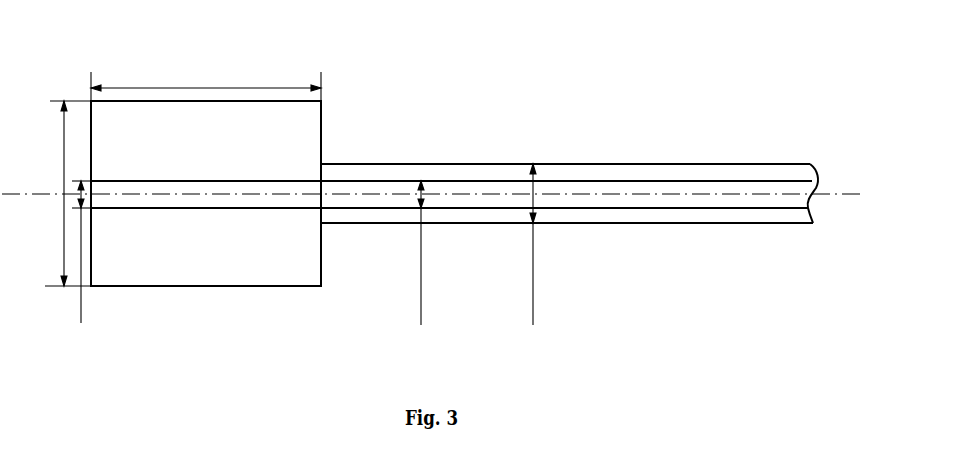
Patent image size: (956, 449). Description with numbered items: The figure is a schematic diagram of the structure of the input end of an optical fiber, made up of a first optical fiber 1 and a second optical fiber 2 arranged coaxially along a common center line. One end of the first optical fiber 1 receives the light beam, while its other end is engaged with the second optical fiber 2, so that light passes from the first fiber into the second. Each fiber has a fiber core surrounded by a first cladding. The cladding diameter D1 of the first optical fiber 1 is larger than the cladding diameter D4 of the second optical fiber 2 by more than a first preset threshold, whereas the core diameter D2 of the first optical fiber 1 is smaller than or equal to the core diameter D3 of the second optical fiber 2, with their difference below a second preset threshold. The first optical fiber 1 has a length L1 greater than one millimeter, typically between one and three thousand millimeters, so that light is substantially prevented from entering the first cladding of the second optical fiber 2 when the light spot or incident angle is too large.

The first optical fiber 1 is at (187, 286).
The second optical fiber 2 is at (613, 223).
The length of the first optical fiber L1 is at (206, 79).
The diameter of the first cladding of the first optical fiber D1 is at (64, 193).
The diameter of the fiber core of the first optical fiber D2 is at (94, 252).
The diameter of the fiber core of the second optical fiber D3 is at (435, 253).
The diameter of the first cladding of the second optical fiber D4 is at (548, 244).